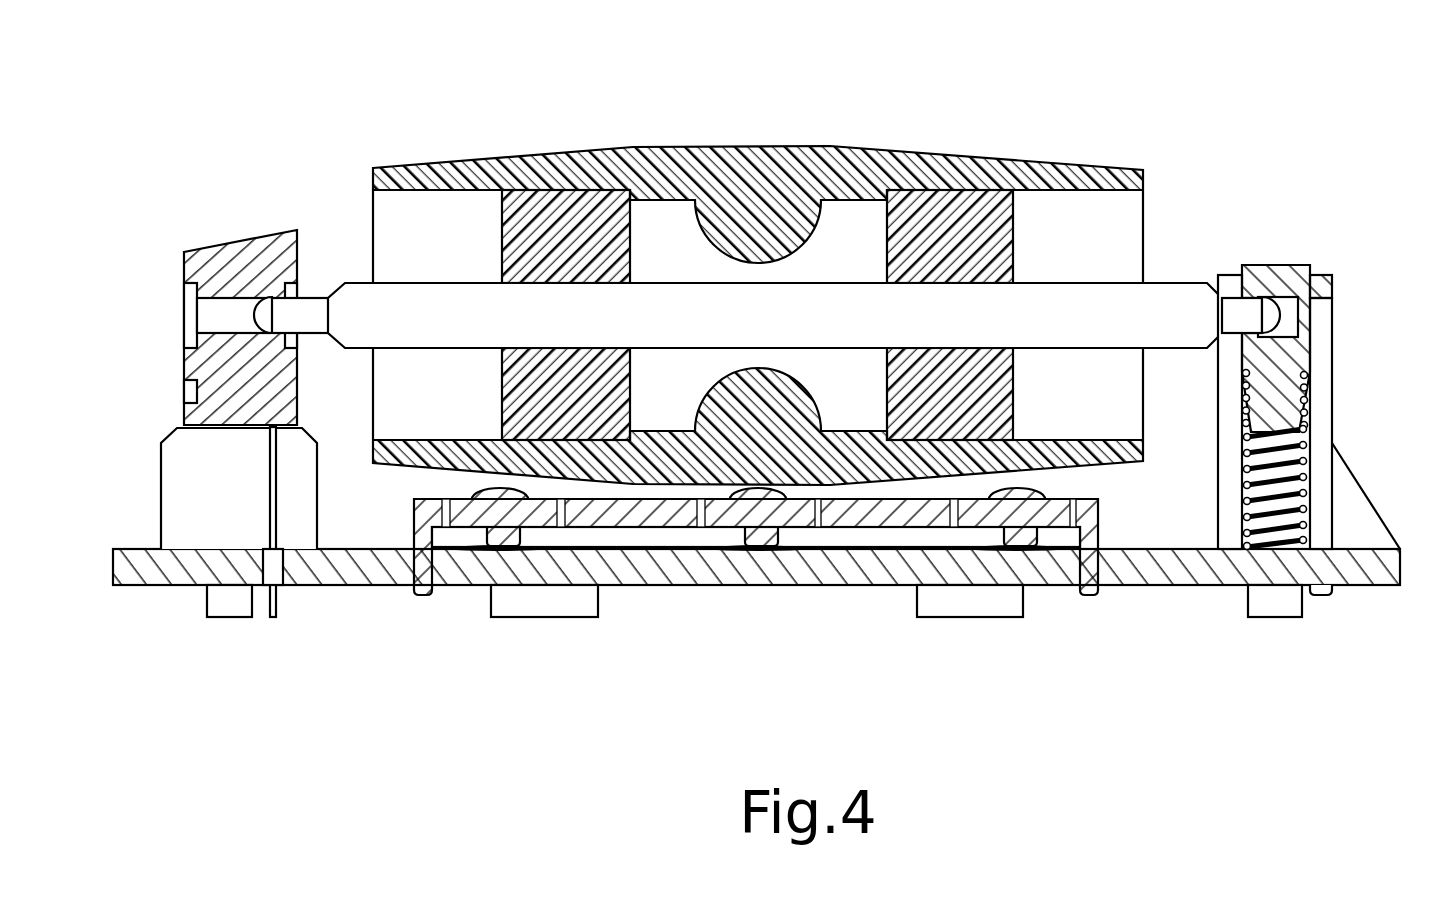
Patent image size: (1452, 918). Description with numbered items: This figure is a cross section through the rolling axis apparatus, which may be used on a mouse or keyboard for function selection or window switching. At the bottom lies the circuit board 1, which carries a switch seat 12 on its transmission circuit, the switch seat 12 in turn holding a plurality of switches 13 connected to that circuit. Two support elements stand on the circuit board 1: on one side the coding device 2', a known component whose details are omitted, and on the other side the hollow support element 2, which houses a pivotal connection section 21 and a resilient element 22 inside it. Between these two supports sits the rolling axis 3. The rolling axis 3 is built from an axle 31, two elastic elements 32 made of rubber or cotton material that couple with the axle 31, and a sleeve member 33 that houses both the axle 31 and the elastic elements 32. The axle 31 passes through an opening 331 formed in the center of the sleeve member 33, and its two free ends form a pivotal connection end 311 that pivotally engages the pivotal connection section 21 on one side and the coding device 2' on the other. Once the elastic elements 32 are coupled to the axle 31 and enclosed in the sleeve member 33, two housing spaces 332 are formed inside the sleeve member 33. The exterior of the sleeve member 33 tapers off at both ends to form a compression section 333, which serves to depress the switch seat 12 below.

The circuit board 1 is at (1193, 577).
The switch seat 12 is at (1072, 568).
The switches 13 is at (760, 512).
The support element 2 is at (1329, 352).
The pivotal connection section 21 is at (1287, 278).
The resilient element 22 is at (1283, 475).
The coding device 2' is at (245, 379).
The rolling axis 3 is at (795, 401).
The axle 31 is at (443, 310).
The pivotal connection end 311 is at (1238, 315).
The elastic elements 32 is at (591, 218).
The sleeve member 33 is at (779, 255).
The opening 331 is at (800, 270).
The housing spaces 332 is at (1102, 218).
The compression section 333 is at (1040, 175).